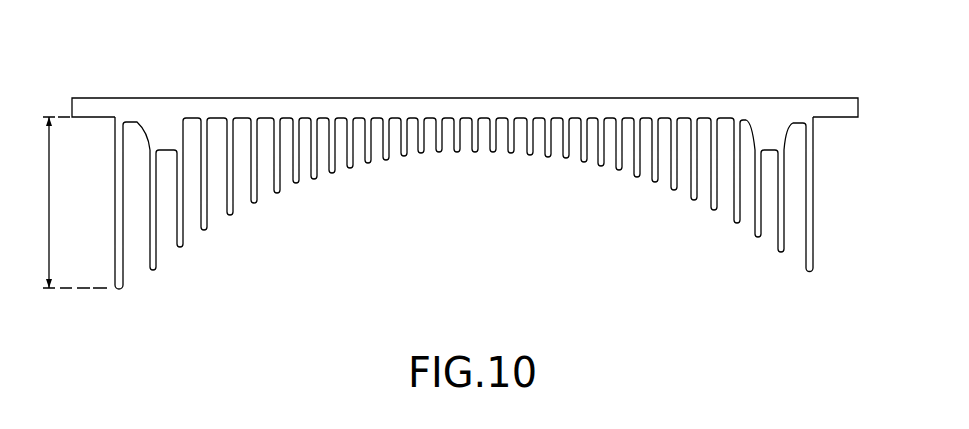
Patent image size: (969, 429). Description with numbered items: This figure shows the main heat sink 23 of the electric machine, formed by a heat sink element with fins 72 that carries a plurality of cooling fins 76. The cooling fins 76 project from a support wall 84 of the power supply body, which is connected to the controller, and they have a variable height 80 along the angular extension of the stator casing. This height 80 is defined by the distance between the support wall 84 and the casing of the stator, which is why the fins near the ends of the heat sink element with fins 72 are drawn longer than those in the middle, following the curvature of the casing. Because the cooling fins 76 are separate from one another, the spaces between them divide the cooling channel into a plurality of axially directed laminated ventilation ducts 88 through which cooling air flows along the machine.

The main heat sink 23 is at (465, 177).
The heat sink element with fins 72 is at (330, 70).
The support wall 84 is at (715, 98).
The axially directed laminated ventilation ducts 88 is at (216, 133).
The cooling fins 76 is at (297, 180).
The variable height 80 is at (70, 202).